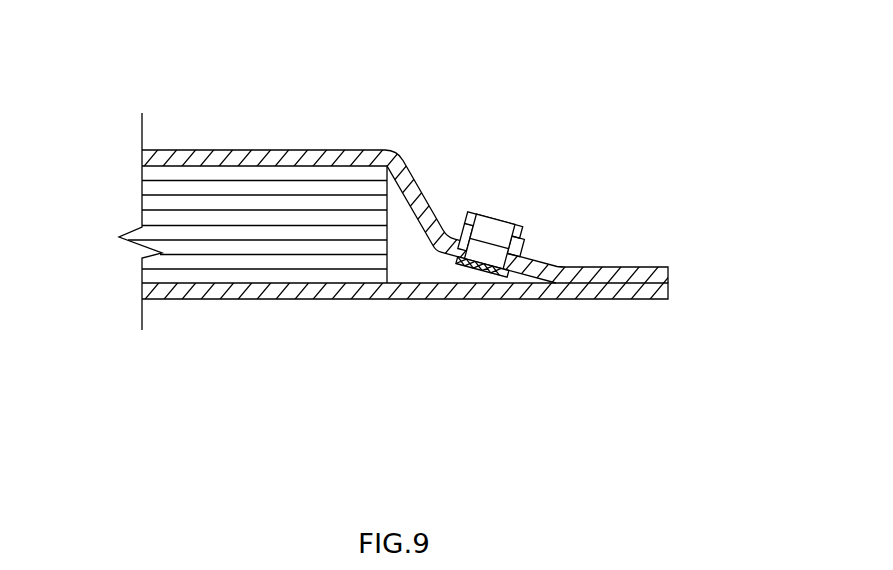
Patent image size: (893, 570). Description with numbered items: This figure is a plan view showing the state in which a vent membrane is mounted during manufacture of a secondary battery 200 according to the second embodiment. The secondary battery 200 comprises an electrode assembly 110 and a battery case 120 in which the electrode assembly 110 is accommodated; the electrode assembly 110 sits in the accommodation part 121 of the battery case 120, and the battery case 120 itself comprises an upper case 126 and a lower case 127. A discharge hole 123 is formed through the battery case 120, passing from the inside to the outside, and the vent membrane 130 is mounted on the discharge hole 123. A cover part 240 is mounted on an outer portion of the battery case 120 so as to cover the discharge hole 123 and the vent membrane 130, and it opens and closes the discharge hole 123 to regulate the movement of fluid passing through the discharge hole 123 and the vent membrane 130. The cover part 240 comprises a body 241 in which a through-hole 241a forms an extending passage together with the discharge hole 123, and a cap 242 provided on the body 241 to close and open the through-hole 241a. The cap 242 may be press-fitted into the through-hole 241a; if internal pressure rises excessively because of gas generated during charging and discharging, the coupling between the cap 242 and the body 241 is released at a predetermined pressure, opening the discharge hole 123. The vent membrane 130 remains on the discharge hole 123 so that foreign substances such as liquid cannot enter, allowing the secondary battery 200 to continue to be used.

The secondary battery 200 is at (560, 30).
The electrode assembly 110 is at (128, 202).
The battery case 120 is at (635, 312).
The accommodation part 121 is at (408, 270).
The discharge hole 123 is at (498, 276).
The upper case 126 is at (668, 292).
The lower case 127 is at (668, 277).
The vent membrane 130 is at (493, 257).
The cover part 240 is at (492, 113).
The body 241 is at (466, 222).
The through-hole 241a is at (515, 237).
The cap 242 is at (489, 218).